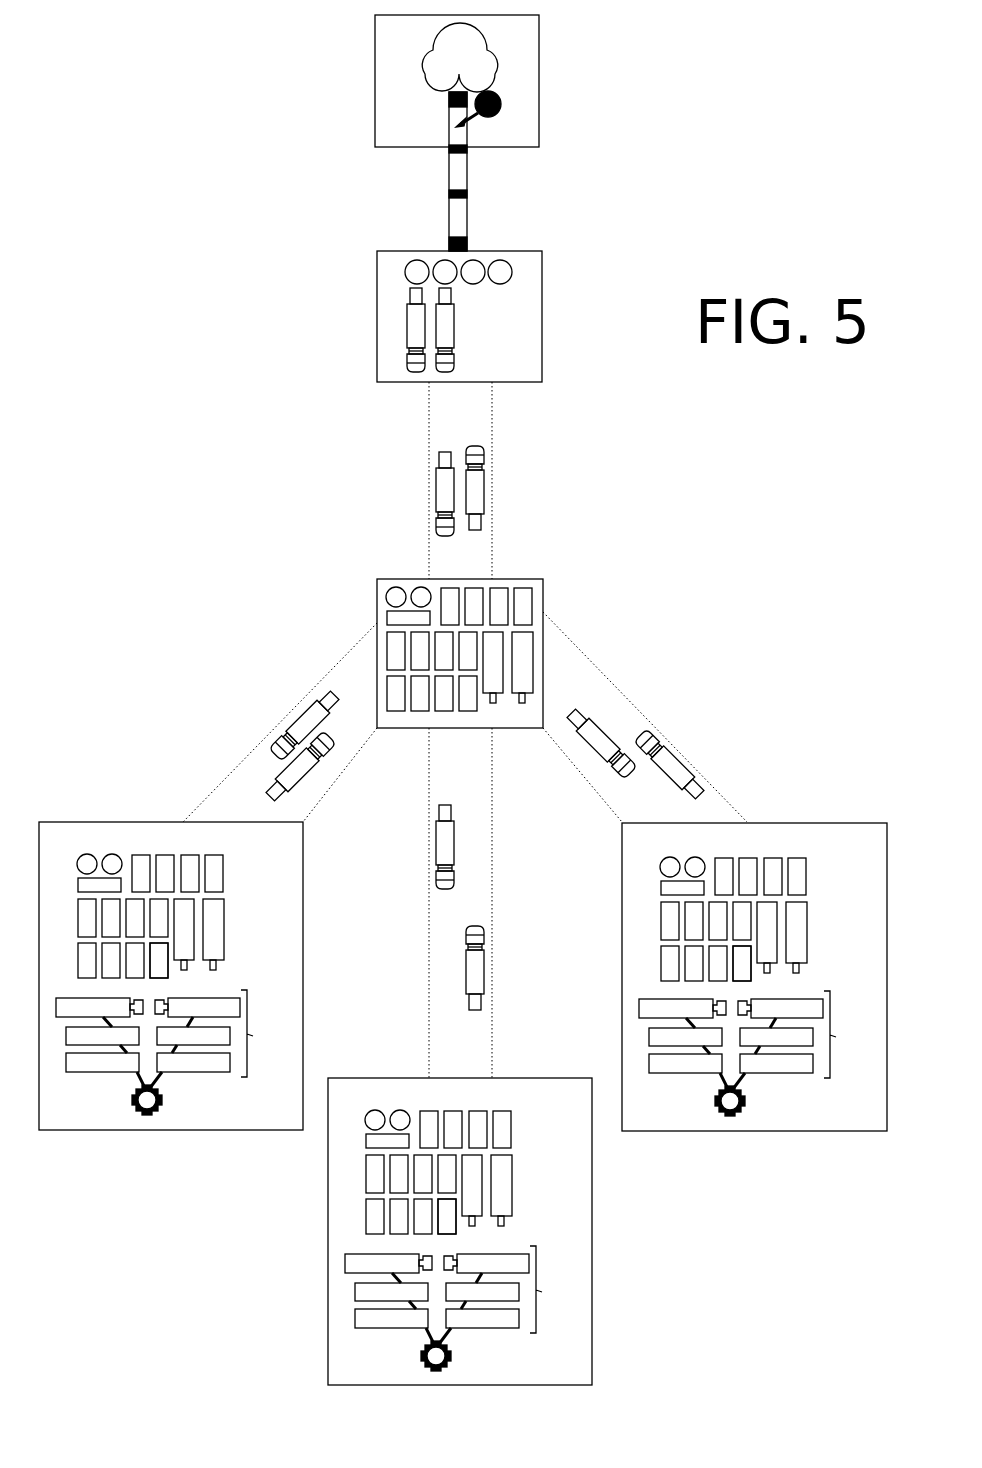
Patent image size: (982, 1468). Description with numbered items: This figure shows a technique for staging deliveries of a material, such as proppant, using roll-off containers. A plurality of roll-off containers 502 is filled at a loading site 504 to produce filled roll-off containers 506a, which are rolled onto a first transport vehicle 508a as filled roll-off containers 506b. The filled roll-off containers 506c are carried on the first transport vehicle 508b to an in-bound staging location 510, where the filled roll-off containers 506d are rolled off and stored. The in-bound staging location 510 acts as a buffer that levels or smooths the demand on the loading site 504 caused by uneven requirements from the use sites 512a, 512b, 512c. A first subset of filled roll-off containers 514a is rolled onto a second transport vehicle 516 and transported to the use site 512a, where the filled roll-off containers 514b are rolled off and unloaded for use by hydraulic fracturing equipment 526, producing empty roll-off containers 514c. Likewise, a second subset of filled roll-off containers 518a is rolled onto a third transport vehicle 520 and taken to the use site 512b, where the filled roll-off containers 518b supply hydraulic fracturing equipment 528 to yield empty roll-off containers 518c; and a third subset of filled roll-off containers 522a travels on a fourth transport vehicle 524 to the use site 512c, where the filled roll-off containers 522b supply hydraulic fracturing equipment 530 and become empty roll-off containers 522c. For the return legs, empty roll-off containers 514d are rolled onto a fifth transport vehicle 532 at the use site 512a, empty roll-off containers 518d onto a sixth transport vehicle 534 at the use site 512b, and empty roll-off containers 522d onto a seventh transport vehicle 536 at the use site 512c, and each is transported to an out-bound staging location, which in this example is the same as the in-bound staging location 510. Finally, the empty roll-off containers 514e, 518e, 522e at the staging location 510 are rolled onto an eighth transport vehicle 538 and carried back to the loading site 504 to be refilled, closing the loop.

The roll-off containers 502 is at (470, 138).
The loading site 504 is at (541, 106).
The filled roll-off containers 506a is at (449, 214).
The filled roll-off containers 506b is at (408, 322).
The filled roll-off containers 506c is at (436, 493).
The filled roll-off containers 506d is at (386, 650).
The first transport vehicle 508a is at (408, 360).
The first transport vehicle 508b is at (436, 525).
The in-bound staging location 510 is at (543, 598).
The use site 512a is at (122, 822).
The use site 512b is at (383, 1078).
The use site 512c is at (825, 823).
The subset of filled roll-off containers 514a is at (330, 725).
The subset of filled roll-off containers 514b is at (224, 875).
The empty roll-off containers 514c is at (158, 978).
The subset of empty roll-off containers 514d is at (312, 780).
The subset of empty roll-off containers 514e is at (587, 499).
The second transport vehicle 516 is at (282, 747).
The second subset of filled roll-off containers 518a is at (455, 848).
The second subset of filled roll-off containers 518b is at (513, 1131).
The empty roll-off containers 518c is at (446, 1234).
The subset of empty roll-off containers 518d is at (485, 980).
The subset of empty roll-off containers 518e is at (475, 497).
The third transport vehicle 520 is at (436, 878).
The third subset of filled roll-off containers 522a is at (600, 730).
The third subset of filled roll-off containers 522b is at (807, 878).
The empty roll-off containers 522c is at (741, 981).
The subset of empty roll-off containers 522d is at (690, 770).
The subset of empty roll-off containers 522e is at (484, 505).
The fourth transport vehicle 524 is at (615, 776).
The hydraulic fracturing equipment 526 is at (176, 1052).
The hydraulic fracturing equipment 528 is at (465, 1308).
The hydraulic fracturing equipment 530 is at (759, 1053).
The fifth transport vehicle 532 is at (333, 752).
The sixth transport vehicle 534 is at (466, 940).
The plug 536 is at (655, 745).
The eighth transport vehicle 538 is at (484, 460).